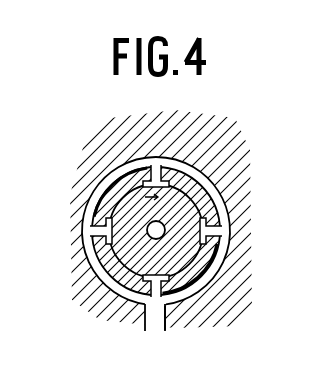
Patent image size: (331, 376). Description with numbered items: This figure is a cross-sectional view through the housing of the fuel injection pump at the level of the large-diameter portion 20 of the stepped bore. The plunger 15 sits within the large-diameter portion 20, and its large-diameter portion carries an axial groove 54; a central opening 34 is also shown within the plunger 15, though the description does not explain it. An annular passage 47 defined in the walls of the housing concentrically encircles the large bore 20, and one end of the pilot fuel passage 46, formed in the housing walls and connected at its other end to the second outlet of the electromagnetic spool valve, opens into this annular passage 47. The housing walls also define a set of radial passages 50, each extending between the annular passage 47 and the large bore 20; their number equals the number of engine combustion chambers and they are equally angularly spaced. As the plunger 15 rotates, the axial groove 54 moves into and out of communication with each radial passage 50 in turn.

The plunger 15 is at (92, 258).
The large-diameter portion 20 is at (178, 188).
The central bore 34 is at (166, 229).
The pilot fuel passage 46 is at (168, 313).
The annular passage 47 is at (108, 175).
The radial passages 50 is at (146, 164).
The axial groove 54 is at (143, 309).